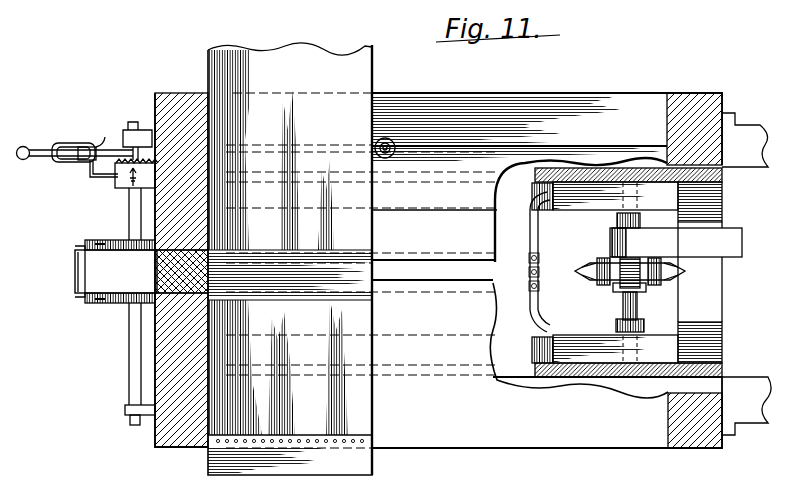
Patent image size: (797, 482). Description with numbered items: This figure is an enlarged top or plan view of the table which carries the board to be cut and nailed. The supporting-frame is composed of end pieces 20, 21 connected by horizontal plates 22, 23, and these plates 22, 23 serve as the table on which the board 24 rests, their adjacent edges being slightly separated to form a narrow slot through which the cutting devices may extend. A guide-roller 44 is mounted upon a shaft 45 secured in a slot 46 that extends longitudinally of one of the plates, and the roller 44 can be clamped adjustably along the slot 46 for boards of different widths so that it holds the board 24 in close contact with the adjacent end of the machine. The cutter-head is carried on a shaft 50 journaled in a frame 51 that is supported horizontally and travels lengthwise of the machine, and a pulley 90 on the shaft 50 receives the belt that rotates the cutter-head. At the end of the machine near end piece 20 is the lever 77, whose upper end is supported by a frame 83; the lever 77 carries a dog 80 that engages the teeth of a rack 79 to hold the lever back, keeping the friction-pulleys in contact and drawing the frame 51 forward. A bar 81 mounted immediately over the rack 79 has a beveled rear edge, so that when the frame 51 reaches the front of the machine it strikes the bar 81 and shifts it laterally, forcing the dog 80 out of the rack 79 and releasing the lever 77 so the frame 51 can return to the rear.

The end piece 20 is at (181, 440).
The end piece 21 is at (702, 440).
The horizontal plate 22 is at (571, 365).
The horizontal plate 23 is at (434, 245).
The board 24 is at (351, 259).
The guide-roller 44 is at (393, 140).
The shaft 45 is at (386, 138).
The slot 46 is at (492, 150).
The shaft 50 is at (634, 300).
The frame 51 is at (545, 238).
The lever 77 is at (52, 151).
The rack 79 is at (115, 166).
The dog 80 is at (87, 149).
The bar 81 is at (124, 182).
The frame 83 is at (62, 162).
The pulley 90 is at (617, 222).